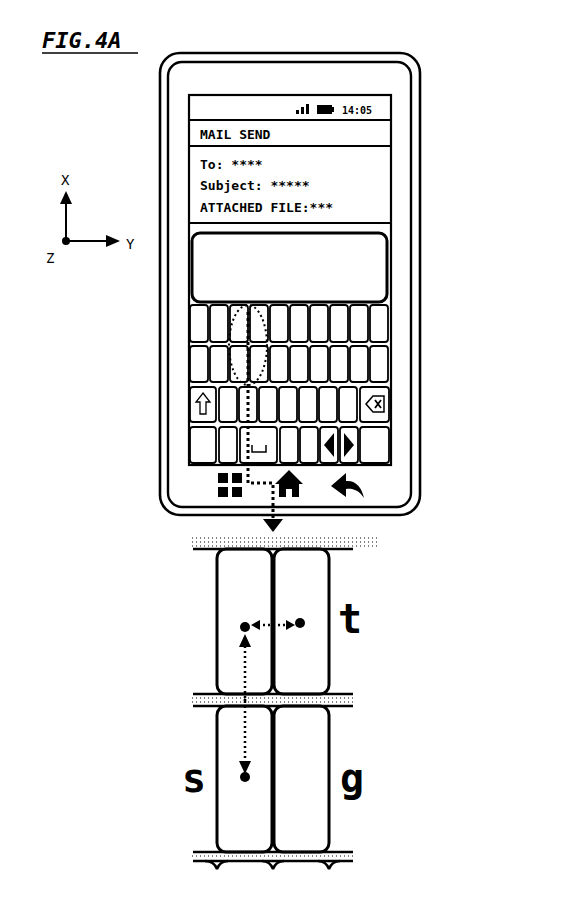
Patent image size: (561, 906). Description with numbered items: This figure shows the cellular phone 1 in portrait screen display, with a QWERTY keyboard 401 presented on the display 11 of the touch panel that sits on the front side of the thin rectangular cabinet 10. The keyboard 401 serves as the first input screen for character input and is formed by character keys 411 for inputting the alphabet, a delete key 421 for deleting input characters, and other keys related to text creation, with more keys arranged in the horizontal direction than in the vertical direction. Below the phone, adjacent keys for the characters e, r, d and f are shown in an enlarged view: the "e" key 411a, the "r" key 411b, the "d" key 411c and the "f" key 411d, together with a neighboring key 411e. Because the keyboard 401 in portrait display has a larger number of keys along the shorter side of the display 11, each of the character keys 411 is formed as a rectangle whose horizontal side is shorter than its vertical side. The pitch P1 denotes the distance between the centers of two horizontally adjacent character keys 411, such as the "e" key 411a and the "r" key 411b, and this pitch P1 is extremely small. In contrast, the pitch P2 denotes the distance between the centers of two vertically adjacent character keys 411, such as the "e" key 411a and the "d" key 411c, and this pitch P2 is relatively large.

The cellular phone 1 is at (428, 126).
The cabinet 10 is at (411, 206).
The display 11 is at (389, 265).
The QWERTY keyboard 401 is at (190, 388).
The character keys 411 is at (298, 333).
The delete key 421 is at (388, 388).
The "e" key 411a is at (233, 603).
The "r" key 411b is at (312, 617).
The "d" key 411c is at (230, 774).
The "f" key 411d is at (312, 756).
The v key 411e is at (192, 613).
The pitch between horizontally adjacent character keys P1 is at (277, 621).
The pitch between vertically adjacent character keys P2 is at (245, 700).